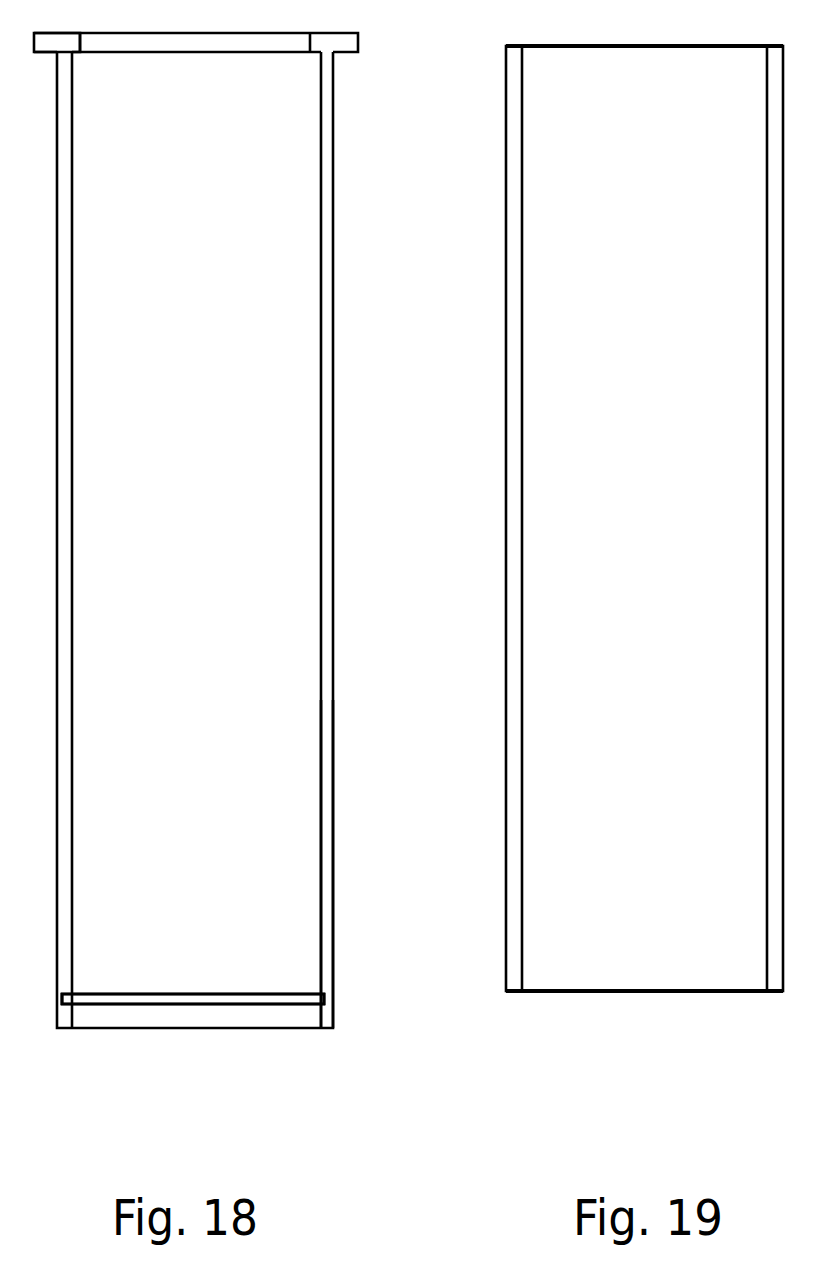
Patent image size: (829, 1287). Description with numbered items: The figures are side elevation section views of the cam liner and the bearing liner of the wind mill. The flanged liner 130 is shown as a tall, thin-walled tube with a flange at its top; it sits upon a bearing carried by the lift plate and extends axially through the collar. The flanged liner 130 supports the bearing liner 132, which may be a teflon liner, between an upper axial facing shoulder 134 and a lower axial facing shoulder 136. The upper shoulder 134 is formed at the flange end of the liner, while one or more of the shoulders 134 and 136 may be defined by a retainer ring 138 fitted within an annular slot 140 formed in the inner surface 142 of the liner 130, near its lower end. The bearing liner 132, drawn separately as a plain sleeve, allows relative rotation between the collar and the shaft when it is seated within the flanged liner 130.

In FIG. 18, the flanged liner 130 is at (329, 410).
In FIG. 19, the bearing liner 132 is at (505, 485).
In FIG. 18, the upper axial facing shoulder 134 is at (71, 54).
In FIG. 18, the lower axial facing shoulder 136 is at (72, 992).
In FIG. 18, the retainer ring 138 is at (193, 999).
In FIG. 18, the annular slot 140 is at (324, 999).
In FIG. 18, the inner surface 142 is at (319, 890).